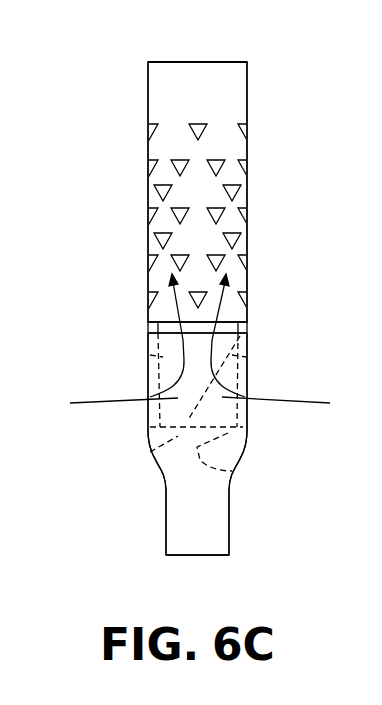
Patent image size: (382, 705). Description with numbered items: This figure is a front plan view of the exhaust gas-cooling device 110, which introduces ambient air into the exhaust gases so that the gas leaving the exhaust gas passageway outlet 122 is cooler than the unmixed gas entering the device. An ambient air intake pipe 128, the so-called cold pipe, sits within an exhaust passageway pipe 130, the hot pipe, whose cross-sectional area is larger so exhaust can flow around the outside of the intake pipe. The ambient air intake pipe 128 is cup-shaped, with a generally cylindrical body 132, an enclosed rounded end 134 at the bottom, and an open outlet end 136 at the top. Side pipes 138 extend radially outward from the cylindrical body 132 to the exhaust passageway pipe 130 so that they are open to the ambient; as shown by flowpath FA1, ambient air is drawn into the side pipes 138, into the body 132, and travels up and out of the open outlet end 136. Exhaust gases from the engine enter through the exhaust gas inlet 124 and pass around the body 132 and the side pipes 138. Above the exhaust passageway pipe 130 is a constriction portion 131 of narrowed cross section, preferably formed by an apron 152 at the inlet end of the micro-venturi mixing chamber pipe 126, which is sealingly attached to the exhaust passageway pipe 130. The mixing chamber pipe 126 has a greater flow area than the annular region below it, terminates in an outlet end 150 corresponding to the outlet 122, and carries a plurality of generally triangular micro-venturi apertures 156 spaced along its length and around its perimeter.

The exhaust gas-cooling device 110 is at (88, 141).
The exhaust gas passageway outlet 122 is at (214, 62).
The exhaust gas inlet 124 is at (214, 555).
The micro-venturi mixing chamber pipe 126 is at (222, 88).
The ambient air intake pipe 128 is at (248, 333).
The exhaust passageway pipe 130 is at (248, 445).
The constriction portion 131 is at (148, 322).
The cylindrical body 132 is at (145, 456).
The enclosed rounded end 134 is at (232, 471).
The open outlet end 136 is at (240, 305).
The side pipes 138 is at (143, 387).
The outlet end 150 is at (176, 62).
The apron 152 is at (148, 333).
The micro-venturi apertures 156 is at (232, 190).
The ambient air flowpath FA1 is at (197, 409).